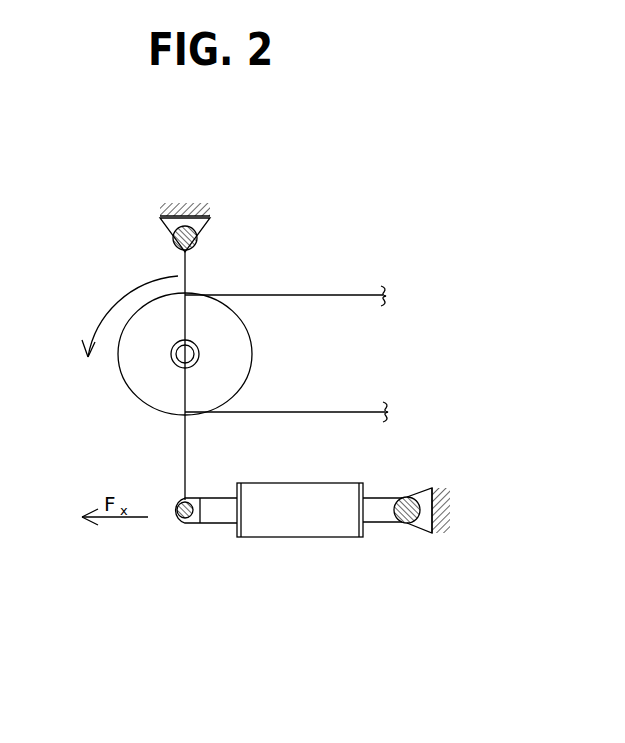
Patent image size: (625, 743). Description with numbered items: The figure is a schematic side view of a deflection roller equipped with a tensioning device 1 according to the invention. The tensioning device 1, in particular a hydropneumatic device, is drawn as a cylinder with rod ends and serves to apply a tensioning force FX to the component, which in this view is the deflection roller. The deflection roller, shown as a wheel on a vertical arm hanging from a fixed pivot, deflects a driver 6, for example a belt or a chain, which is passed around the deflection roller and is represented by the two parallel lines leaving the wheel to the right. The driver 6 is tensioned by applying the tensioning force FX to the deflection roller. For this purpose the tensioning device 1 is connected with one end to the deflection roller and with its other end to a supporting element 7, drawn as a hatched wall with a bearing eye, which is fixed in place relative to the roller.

The tensioning device 1 is at (318, 552).
The driver 6 is at (319, 295).
The supporting element 7 is at (445, 503).